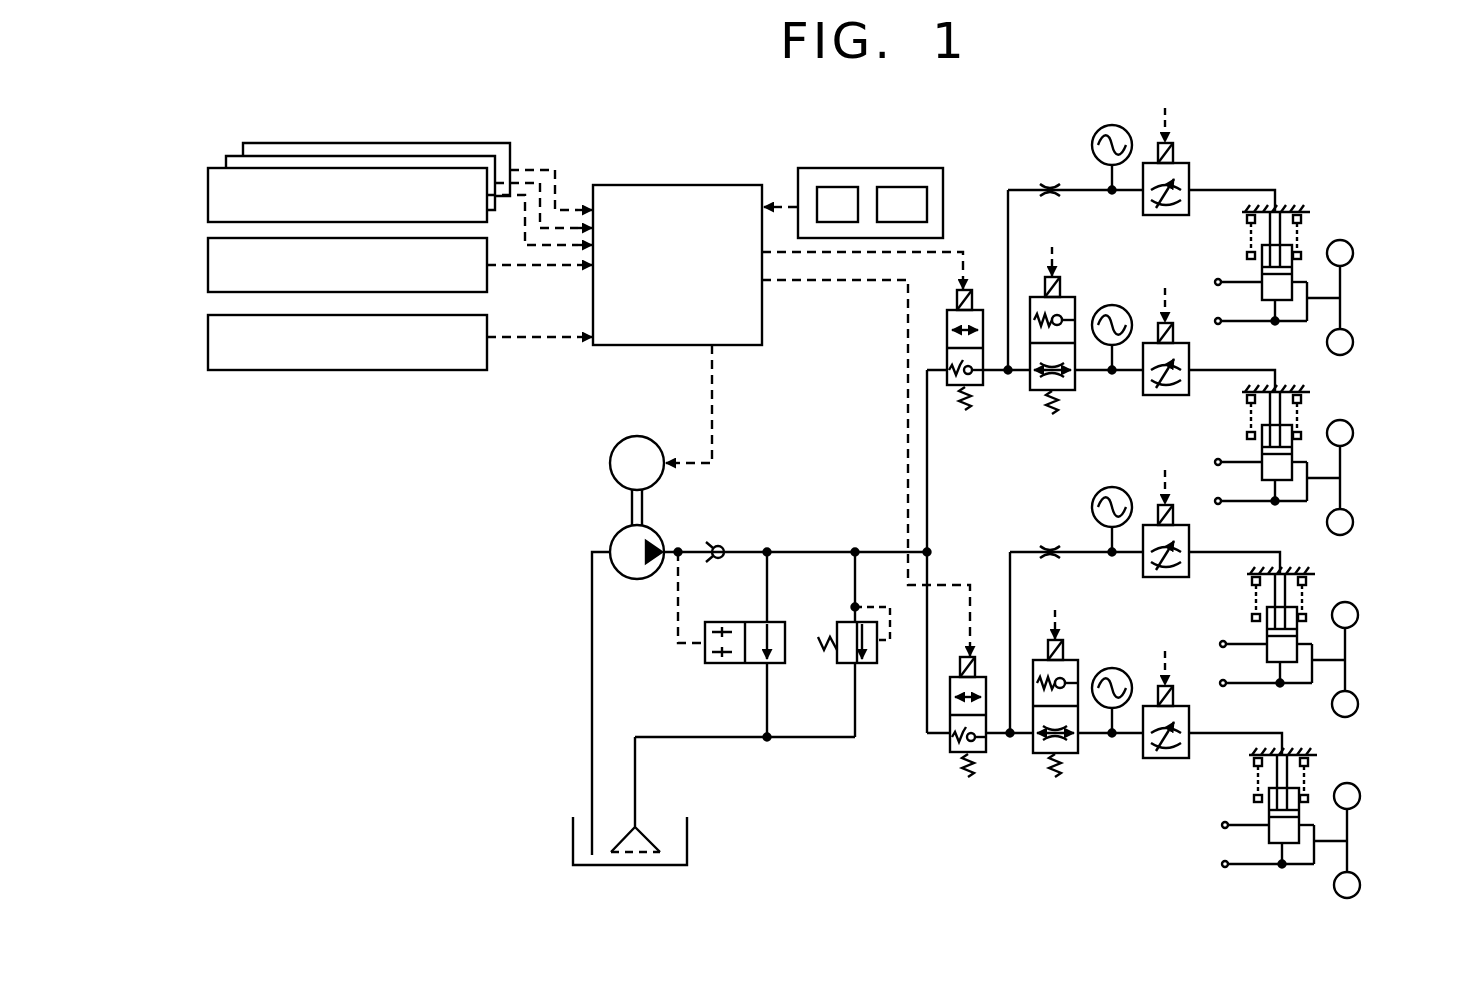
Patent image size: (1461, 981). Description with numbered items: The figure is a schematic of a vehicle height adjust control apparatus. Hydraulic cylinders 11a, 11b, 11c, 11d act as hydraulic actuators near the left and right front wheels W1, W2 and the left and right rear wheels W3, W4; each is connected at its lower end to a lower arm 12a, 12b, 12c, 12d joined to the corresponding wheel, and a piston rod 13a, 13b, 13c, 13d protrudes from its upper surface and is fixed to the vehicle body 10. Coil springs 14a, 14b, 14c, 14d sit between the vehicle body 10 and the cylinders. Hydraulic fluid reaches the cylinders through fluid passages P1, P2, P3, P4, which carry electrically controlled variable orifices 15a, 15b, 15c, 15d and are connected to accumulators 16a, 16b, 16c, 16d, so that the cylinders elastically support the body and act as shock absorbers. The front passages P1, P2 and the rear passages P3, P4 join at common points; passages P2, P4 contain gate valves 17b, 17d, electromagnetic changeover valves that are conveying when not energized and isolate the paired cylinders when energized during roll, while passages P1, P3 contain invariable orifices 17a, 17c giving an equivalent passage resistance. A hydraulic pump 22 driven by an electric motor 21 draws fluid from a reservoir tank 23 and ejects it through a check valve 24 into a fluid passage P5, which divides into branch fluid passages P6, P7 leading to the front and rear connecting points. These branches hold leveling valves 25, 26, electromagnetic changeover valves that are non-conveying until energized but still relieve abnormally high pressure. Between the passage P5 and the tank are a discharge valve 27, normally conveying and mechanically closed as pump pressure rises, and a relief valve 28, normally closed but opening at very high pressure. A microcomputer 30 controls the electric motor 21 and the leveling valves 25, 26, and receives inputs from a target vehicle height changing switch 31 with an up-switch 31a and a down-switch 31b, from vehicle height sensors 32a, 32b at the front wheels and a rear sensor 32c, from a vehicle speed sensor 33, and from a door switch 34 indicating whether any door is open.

The vehicle body 10 is at (1247, 222).
The hydraulic cylinder 11a is at (1262, 268).
The hydraulic cylinder 11b is at (1262, 448).
The hydraulic cylinder 11c is at (1267, 630).
The hydraulic cylinder 11d is at (1269, 808).
The lower arm 12a is at (1245, 320).
The lower arm 12b is at (1245, 500).
The lower arm 12c is at (1250, 682).
The lower arm 12d is at (1229, 864).
The piston rod 13a is at (1277, 230).
The piston rod 13b is at (1277, 410).
The piston rod 13c is at (1282, 592).
The piston rod 13d is at (1284, 773).
The coil spring 14a is at (1301, 250).
The coil spring 14b is at (1301, 430).
The coil spring 14c is at (1306, 612).
The coil spring 14d is at (1308, 793).
The variable orifice 15a is at (1188, 174).
The variable orifice 15b is at (1188, 354).
The variable orifice 15c is at (1188, 536).
The variable orifice 15d is at (1188, 718).
The accumulator 16a is at (1130, 120).
The accumulator 16b is at (1132, 305).
The accumulator 16c is at (1122, 465).
The accumulator 16d is at (1125, 666).
The invariable orifice 17a is at (1050, 195).
The gate valve 17b is at (1065, 301).
The invariable orifice 17c is at (1050, 543).
The gate valve 17d is at (1066, 664).
The electric motor 21 is at (610, 455).
The hydraulic pump 22 is at (610, 550).
The reservoir tank 23 is at (690, 838).
The check valve 24 is at (717, 560).
The leveling valve 25 is at (947, 335).
The leveling valve 26 is at (987, 690).
The discharge valve 27 is at (780, 650).
The relief valve 28 is at (868, 663).
The microcomputer 30 is at (638, 185).
The target vehicle height changing switch 31 is at (893, 168).
The up-switch 31a is at (842, 187).
The down-switch 31b is at (907, 187).
The vehicle height sensor 32a is at (315, 167).
The vehicle height sensor 32b is at (397, 156).
The vehicle height sensor 32c is at (487, 143).
The vehicle speed sensor 33 is at (487, 288).
The door switch 34 is at (487, 367).
The fluid passage P1 is at (1105, 193).
The fluid passage P2 is at (1105, 373).
The fluid passage P3 is at (1097, 552).
The fluid passage P4 is at (1113, 736).
The fluid passage P5 is at (821, 554).
The branch fluid passage P6 is at (1007, 373).
The branch fluid passage P7 is at (1008, 736).
The left front wheel W1 is at (1341, 332).
The right front wheel W2 is at (1341, 512).
The left rear wheel W3 is at (1345, 694).
The right rear wheel W4 is at (1345, 872).